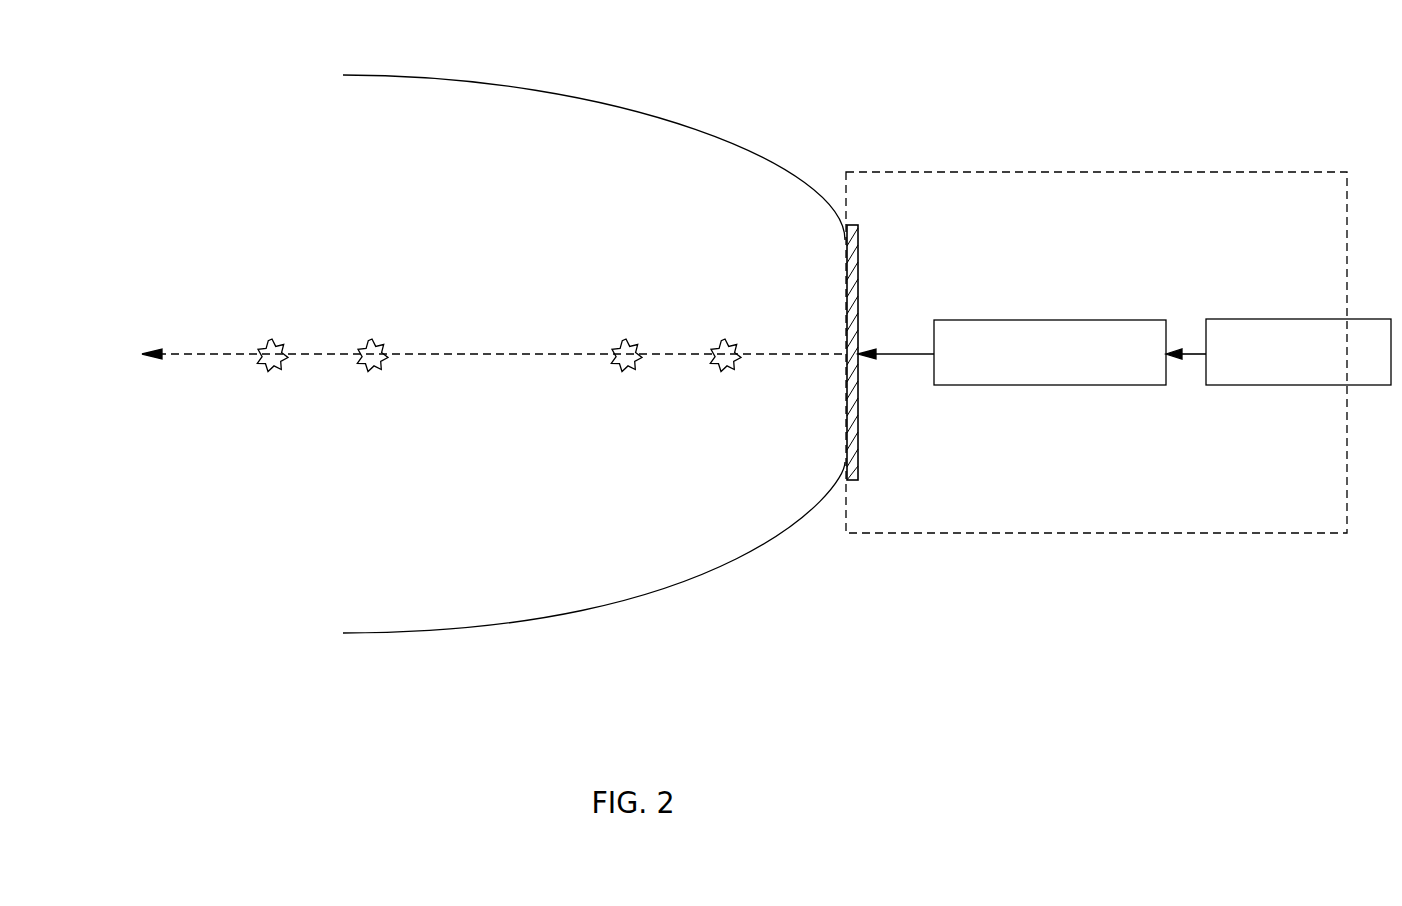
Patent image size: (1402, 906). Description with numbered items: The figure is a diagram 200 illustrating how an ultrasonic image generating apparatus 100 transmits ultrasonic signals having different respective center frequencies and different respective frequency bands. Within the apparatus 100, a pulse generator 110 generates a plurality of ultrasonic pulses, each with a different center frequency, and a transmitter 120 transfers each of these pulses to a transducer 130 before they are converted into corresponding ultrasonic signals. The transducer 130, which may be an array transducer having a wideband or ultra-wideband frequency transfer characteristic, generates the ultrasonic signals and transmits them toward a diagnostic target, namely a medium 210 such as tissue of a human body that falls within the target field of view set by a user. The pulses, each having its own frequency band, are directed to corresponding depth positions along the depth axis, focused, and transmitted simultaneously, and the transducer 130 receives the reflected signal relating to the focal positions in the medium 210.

The diagram 200 is at (728, 43).
The medium 210 is at (557, 597).
The ultrasonic image generating apparatus 100 is at (1098, 534).
The transducer 130 is at (860, 265).
The transmitter 120 is at (1050, 320).
The pulse generator 110 is at (1300, 319).